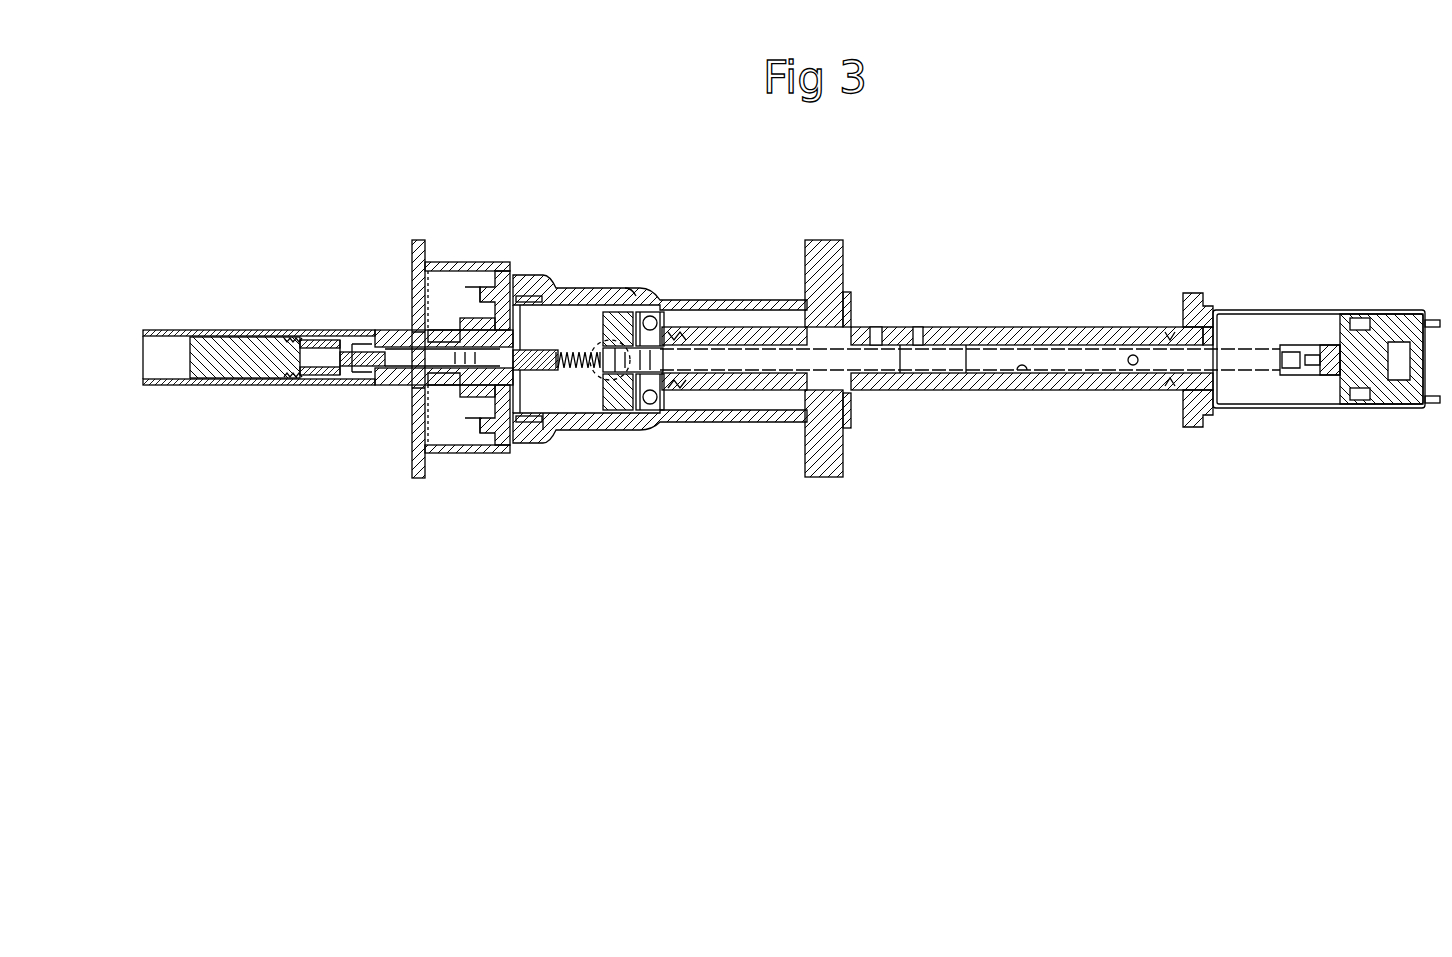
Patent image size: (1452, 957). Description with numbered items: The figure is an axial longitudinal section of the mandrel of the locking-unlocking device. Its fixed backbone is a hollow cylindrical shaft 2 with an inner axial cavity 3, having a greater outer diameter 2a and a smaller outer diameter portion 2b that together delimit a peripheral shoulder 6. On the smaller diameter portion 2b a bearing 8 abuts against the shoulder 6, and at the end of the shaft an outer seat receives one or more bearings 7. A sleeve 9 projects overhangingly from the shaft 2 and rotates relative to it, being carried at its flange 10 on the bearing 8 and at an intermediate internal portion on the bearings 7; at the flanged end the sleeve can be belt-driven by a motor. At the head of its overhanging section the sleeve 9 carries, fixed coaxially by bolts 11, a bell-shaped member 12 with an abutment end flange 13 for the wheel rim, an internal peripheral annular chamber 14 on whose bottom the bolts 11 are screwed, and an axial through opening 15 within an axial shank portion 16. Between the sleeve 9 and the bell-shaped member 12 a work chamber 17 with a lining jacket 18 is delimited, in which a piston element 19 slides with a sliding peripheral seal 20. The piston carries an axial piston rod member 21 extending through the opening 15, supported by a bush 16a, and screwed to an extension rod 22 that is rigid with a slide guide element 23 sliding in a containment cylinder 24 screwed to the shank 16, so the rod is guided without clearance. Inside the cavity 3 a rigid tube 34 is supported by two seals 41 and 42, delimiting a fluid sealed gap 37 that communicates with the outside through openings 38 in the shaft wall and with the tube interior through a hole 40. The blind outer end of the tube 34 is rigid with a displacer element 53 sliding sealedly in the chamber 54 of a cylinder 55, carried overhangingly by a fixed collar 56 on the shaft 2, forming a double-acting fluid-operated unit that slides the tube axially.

The cylindrical shaft 2 is at (1082, 312).
The greater outer diameter 2a is at (1003, 327).
The smaller outer diameter portion 2b is at (752, 327).
The inner axial cavity 3 is at (1022, 370).
The peripheral shoulder 6 is at (852, 327).
The bearings 7 is at (660, 300).
The bearing 8 is at (818, 414).
The sleeve 9 is at (588, 292).
The flange 10 is at (827, 252).
The bolts 11 is at (477, 436).
The bell-shaped member 12 is at (459, 248).
The abutment end flange 13 is at (412, 242).
The peripheral annular chamber 14 is at (443, 432).
The axial through opening 15 is at (411, 390).
The shank portion 16 is at (395, 333).
The bush 16a is at (400, 338).
The work chamber 17 is at (563, 398).
The lining jacket 18 is at (545, 432).
The piston element 19 is at (621, 428).
The sliding peripheral seal 20 is at (640, 290).
The piston rod member 21 is at (543, 350).
The extension rod 22 is at (370, 373).
The slide guide element 23 is at (205, 363).
The containment cylinder 24 is at (198, 335).
The rigid tube 34 is at (902, 362).
The fluid sealed gap 37 is at (968, 373).
The through openings 38 is at (918, 327).
The hole 40 is at (1128, 368).
The seal 41 is at (690, 378).
The seal 42 is at (1172, 392).
The displacer element 53 is at (1368, 313).
The chamber 54 is at (1265, 316).
The cylinder 55 is at (1297, 408).
The fixed collar 56 is at (1193, 293).